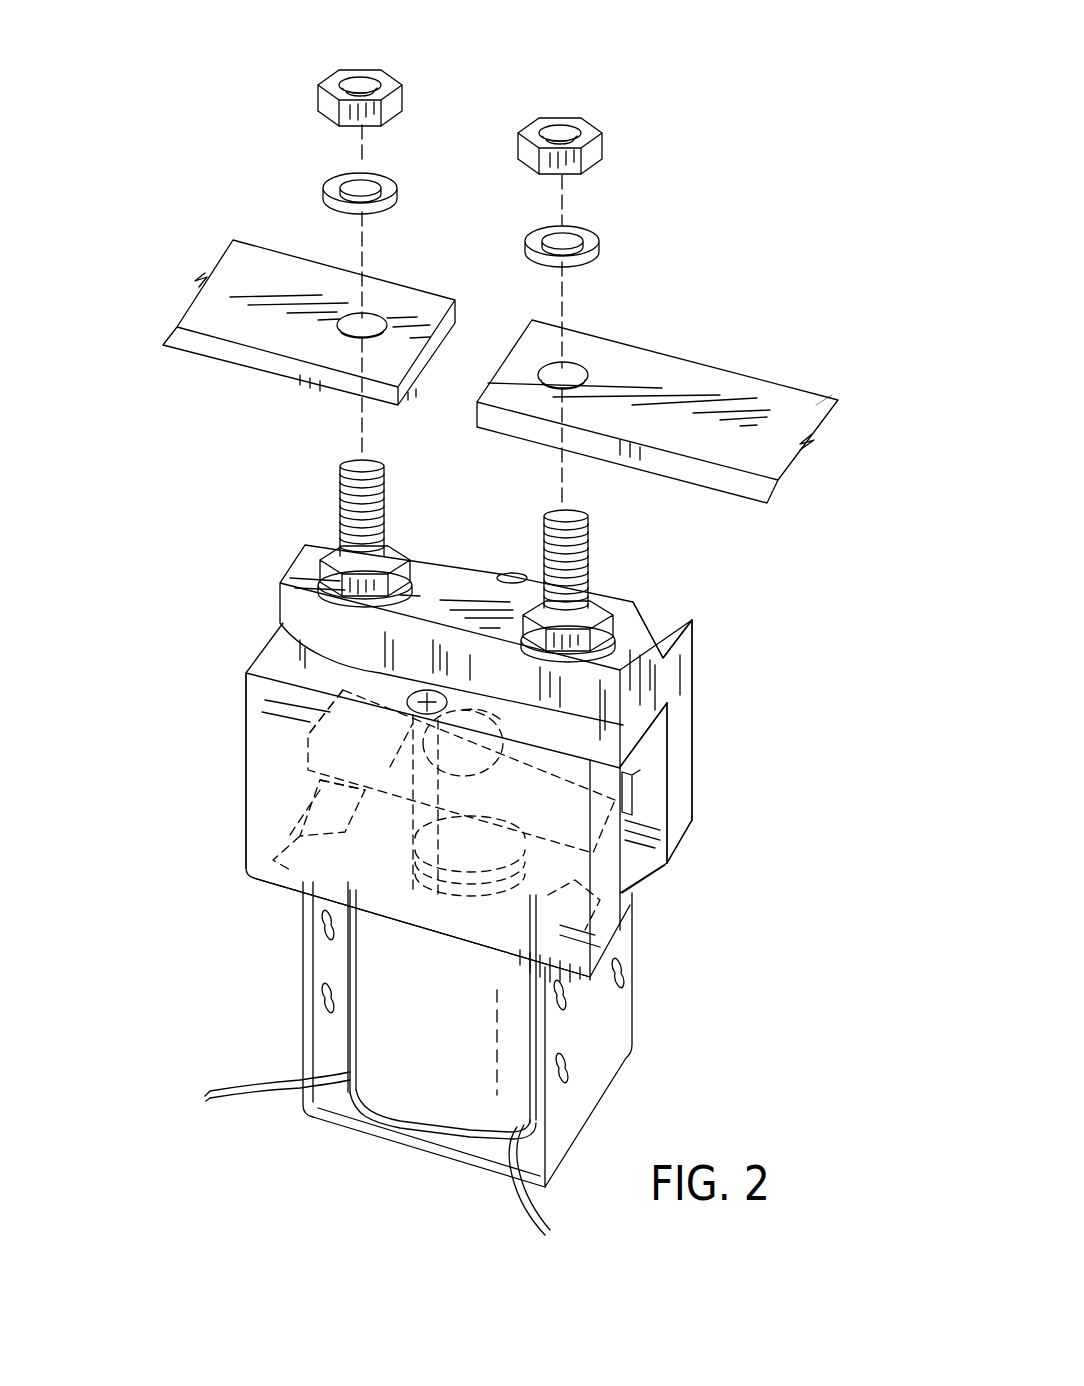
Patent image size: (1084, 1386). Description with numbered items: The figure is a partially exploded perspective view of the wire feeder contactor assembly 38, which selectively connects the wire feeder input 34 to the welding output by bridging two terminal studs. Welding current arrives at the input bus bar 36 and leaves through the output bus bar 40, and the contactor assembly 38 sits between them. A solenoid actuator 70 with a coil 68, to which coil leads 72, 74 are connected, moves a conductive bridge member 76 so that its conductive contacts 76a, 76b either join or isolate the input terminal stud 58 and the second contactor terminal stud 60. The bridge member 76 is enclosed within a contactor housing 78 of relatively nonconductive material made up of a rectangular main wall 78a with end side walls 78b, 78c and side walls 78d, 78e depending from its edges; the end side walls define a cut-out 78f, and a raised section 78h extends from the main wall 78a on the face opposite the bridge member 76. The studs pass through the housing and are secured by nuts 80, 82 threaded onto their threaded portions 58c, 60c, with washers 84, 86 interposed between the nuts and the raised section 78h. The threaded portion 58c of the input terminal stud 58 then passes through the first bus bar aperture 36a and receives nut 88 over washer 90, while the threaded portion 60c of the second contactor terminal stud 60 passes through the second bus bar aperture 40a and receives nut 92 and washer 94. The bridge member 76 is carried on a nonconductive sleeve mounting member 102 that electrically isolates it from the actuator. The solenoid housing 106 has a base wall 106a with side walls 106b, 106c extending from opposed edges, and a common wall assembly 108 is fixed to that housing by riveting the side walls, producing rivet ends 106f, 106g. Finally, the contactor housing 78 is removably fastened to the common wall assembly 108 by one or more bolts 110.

The wire feeder input 34 is at (826, 384).
The input bus bar 36 is at (657, 397).
The first bus bar aperture 36a is at (577, 373).
The contactor assembly 38 is at (165, 782).
The output bus bar 40 is at (301, 329).
The second bus bar aperture 40a is at (372, 320).
The input terminal stud 58 is at (597, 544).
The threaded portion 58c is at (582, 558).
The second contactor terminal stud 60 is at (313, 489).
The threaded portion 60c is at (343, 498).
The coil 68 is at (358, 970).
The solenoid actuator 70 is at (371, 1073).
The coil lead 72 is at (525, 1208).
The coil lead 74 is at (228, 1100).
The conductive bridge member 76 is at (638, 800).
The conductive contact 76a is at (660, 765).
The conductive contact 76b is at (343, 690).
The contactor housing 78 is at (477, 718).
The rectangular main wall 78a is at (667, 622).
The end side wall 78b is at (685, 737).
The end side wall 78c is at (245, 748).
The side wall 78d is at (345, 868).
The side wall 78e is at (697, 665).
The cut-out 78f is at (648, 823).
The raised section 78h is at (450, 567).
The nut 80 is at (592, 612).
The nut 82 is at (327, 553).
The washer 84 is at (608, 627).
The washer 86 is at (320, 580).
The nut 88 is at (597, 148).
The washer 90 is at (597, 236).
The nut 92 is at (325, 100).
The washer 94 is at (325, 185).
The sleeve mounting member 102 is at (505, 722).
The solenoid housing 106 is at (451, 986).
The base wall 106a is at (345, 1130).
The side wall 106b is at (598, 1065).
The side wall 106c is at (305, 967).
The rivet end 106f is at (598, 942).
The rivet end 106g is at (270, 800).
The common wall assembly 108 is at (648, 885).
The bolt 110 is at (512, 572).